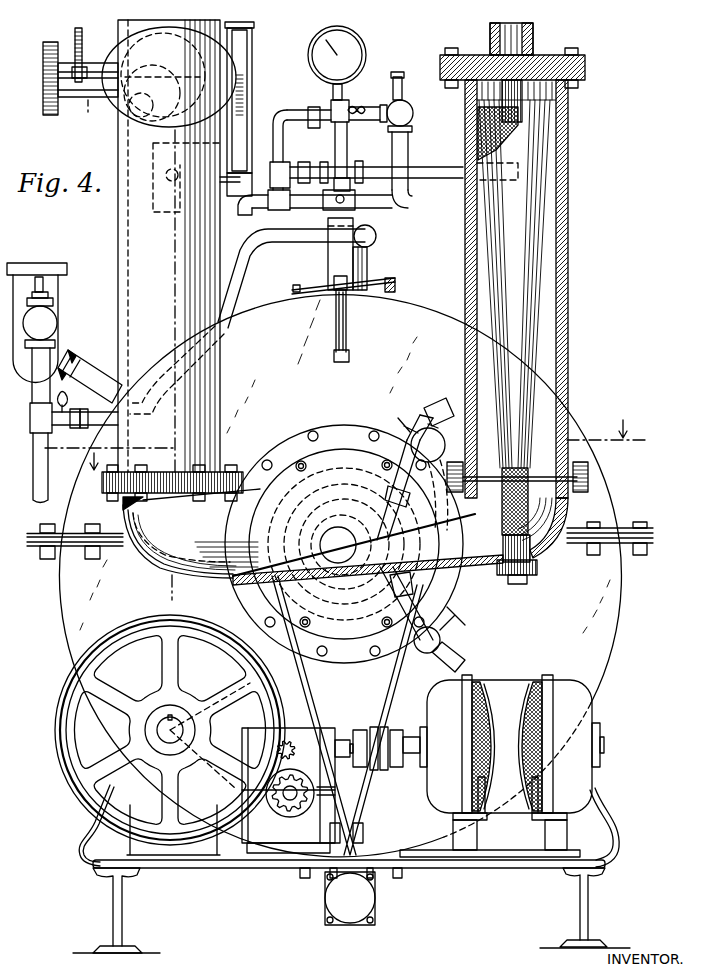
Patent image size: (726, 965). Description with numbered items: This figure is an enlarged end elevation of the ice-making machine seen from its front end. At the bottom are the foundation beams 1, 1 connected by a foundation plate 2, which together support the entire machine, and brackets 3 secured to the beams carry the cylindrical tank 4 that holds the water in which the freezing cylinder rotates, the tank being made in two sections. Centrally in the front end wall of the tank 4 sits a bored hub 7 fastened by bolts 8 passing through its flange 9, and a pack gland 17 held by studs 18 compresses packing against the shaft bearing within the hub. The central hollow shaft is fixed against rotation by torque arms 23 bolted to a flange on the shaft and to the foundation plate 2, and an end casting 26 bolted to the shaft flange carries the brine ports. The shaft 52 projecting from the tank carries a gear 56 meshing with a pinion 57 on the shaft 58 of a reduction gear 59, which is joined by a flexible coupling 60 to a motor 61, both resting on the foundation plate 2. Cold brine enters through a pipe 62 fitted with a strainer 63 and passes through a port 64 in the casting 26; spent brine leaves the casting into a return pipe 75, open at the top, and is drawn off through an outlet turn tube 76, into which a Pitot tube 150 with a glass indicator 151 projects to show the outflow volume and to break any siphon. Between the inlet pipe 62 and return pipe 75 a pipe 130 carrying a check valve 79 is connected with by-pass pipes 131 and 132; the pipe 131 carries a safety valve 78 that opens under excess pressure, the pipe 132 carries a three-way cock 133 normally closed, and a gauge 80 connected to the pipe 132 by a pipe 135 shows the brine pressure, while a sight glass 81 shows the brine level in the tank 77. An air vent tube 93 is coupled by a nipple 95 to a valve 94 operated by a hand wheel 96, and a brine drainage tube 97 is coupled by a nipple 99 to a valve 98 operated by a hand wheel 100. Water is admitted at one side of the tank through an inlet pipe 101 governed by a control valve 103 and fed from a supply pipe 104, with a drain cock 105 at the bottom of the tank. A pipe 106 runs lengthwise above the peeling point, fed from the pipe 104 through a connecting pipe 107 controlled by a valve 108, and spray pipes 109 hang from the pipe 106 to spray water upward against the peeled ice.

The foundation beams 1 is at (118, 902).
The foundation plate 2 is at (228, 868).
The brackets 3 is at (80, 836).
The cylindrical tank 4 is at (424, 310).
The bored hub 7 is at (346, 447).
The bolts 8 is at (267, 460).
The flange 9 is at (328, 440).
The pack gland 17 is at (340, 470).
The studs 18 is at (301, 461).
The torque arms 23 is at (387, 680).
The end casting 26 is at (350, 452).
The shaft 52 is at (169, 744).
The gear 56 is at (58, 715).
The pinion 57 is at (282, 807).
The shaft 58 is at (288, 800).
The reduction gear 59 is at (290, 752).
The flexible coupling 60 is at (378, 730).
The motor 61 is at (507, 682).
The pipe 62 is at (569, 251).
The strainer 63 is at (530, 282).
The port 64 is at (310, 572).
The return pipe 75 is at (125, 272).
The outlet turn tube 76 is at (72, 98).
The tank 77 is at (166, 35).
The safety valve 78 is at (412, 110).
The check valve 79 is at (359, 161).
The gauge 80 is at (366, 52).
The sight glass 81 is at (253, 43).
The air vent tube 93 is at (385, 490).
The valve 94 is at (438, 404).
The nipple 95 is at (449, 447).
The hand wheel 96 is at (404, 424).
The brine drainage tube 97 is at (392, 592).
The valve 98 is at (422, 653).
The nipple 99 is at (450, 600).
The hand wheel 100 is at (457, 614).
The inlet pipe 101 is at (88, 372).
The control valve 103 is at (50, 318).
The pipe 104 is at (44, 452).
The drain cock 105 is at (376, 898).
The pipe 106 is at (377, 236).
The connecting pipe 107 is at (255, 268).
The valve 108 is at (58, 427).
The spray pipe 109 is at (368, 262).
The pipe 130 is at (428, 165).
The by-pass pipe 131 is at (362, 108).
The by-pass pipe 132 is at (300, 210).
The three-way cock 133 is at (355, 207).
The pipe 135 is at (335, 140).
The Pitot tube 150 is at (88, 112).
The glass indicator 151 is at (75, 31).